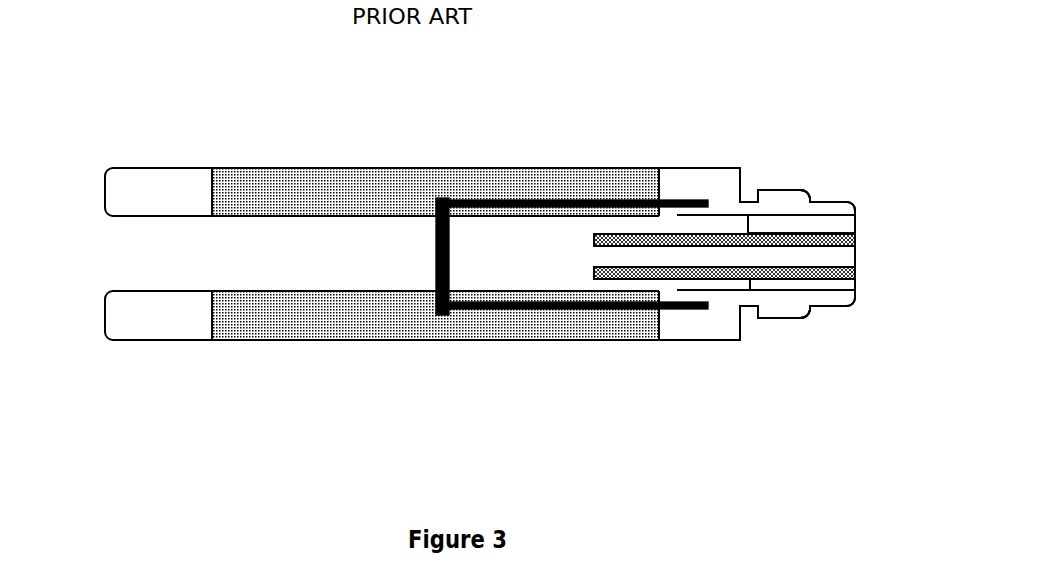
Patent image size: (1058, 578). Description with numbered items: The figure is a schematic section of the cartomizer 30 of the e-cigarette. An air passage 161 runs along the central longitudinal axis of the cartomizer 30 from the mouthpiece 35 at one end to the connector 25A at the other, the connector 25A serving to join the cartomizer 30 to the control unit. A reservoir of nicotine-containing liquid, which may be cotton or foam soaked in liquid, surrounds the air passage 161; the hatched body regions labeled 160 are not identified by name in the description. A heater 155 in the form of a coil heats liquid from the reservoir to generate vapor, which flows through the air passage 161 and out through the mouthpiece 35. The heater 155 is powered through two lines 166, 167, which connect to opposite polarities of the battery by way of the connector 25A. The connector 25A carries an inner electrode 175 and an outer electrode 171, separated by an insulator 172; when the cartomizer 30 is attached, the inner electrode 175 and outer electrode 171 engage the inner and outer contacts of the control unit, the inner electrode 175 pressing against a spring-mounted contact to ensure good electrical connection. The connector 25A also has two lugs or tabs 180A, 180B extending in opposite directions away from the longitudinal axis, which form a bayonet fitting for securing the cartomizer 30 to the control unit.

The connector 25A is at (845, 318).
The cartomizer 30 is at (305, 353).
The mouthpiece 35 is at (118, 358).
The heater 155 is at (435, 237).
The housing wall 160 is at (328, 193).
The air passage 161 is at (268, 255).
The line 166 is at (578, 200).
The line 167 is at (538, 308).
The outer electrode 171 is at (818, 210).
The insulator 172 is at (835, 225).
The inner electrode 175 is at (808, 273).
The lug or tab 180A is at (780, 200).
The lug or tab 180B is at (780, 308).